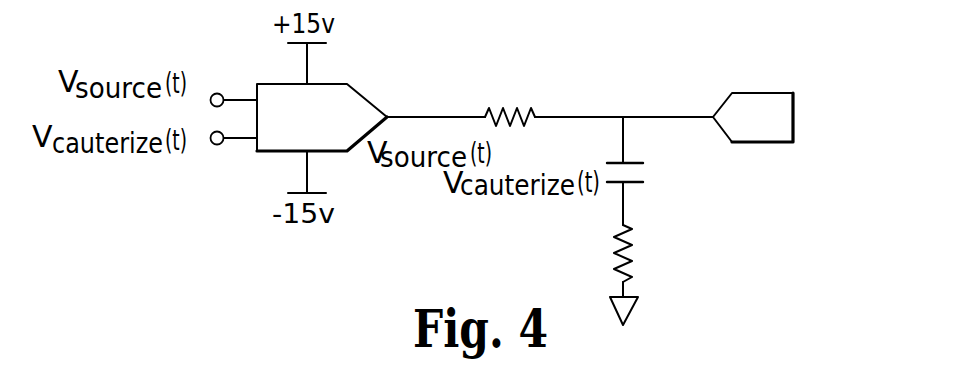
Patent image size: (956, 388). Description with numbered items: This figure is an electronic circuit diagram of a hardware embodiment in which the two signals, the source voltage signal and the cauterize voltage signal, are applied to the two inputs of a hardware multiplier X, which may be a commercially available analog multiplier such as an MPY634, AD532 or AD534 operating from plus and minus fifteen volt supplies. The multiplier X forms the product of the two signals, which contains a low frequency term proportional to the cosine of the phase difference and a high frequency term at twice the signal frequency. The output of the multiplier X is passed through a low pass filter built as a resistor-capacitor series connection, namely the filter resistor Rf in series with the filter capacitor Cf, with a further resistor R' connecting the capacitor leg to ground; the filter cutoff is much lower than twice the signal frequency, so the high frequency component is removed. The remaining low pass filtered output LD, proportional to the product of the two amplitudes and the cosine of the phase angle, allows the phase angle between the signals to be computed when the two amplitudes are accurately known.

The multiplier X is at (322, 117).
The filter resistor Rf is at (510, 96).
The filter capacitor Cf is at (646, 171).
The resistor R' is at (639, 253).
The low pass filtered product LD is at (787, 94).